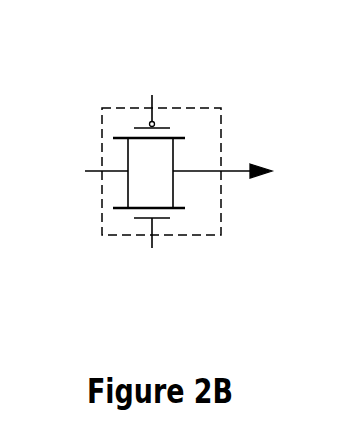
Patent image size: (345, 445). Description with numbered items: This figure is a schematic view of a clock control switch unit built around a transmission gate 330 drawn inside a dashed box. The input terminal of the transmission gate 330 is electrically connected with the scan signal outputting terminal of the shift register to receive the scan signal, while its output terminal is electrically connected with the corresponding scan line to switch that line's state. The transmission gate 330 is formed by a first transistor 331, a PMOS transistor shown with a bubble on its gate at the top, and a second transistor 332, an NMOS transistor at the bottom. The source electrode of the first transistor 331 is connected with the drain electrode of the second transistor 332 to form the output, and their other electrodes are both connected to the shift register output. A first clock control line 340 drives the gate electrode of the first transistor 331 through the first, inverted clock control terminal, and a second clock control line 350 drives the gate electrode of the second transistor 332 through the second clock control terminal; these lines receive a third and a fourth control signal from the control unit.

The transmission gate 330 is at (220, 120).
The first transistor 331 is at (130, 128).
The second transistor 332 is at (130, 218).
The first clock control line 340 is at (150, 70).
The second clock control line 350 is at (148, 270).